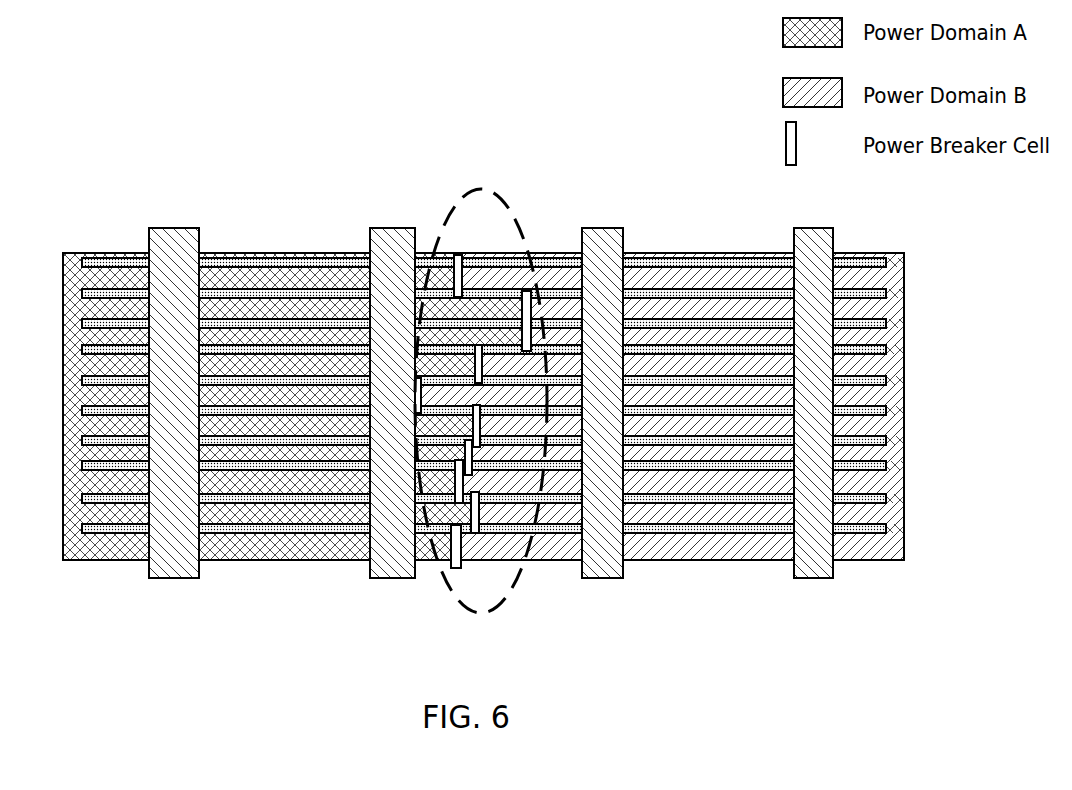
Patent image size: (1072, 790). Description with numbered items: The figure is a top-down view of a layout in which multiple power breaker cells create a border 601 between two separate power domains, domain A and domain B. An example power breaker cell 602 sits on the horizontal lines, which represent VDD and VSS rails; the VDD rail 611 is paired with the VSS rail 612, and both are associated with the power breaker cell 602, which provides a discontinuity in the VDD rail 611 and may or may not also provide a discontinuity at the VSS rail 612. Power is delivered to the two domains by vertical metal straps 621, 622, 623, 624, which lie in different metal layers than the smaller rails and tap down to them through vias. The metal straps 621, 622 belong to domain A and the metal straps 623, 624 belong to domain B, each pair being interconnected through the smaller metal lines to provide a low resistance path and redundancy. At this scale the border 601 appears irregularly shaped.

The border 601 is at (503, 603).
The power breaker cell 602 is at (466, 278).
The VDD rail 611 is at (886, 260).
The VSS rail 612 is at (886, 300).
The metal strap 621 is at (174, 580).
The metal strap 622 is at (391, 580).
The metal strap 623 is at (600, 580).
The metal strap 624 is at (815, 580).